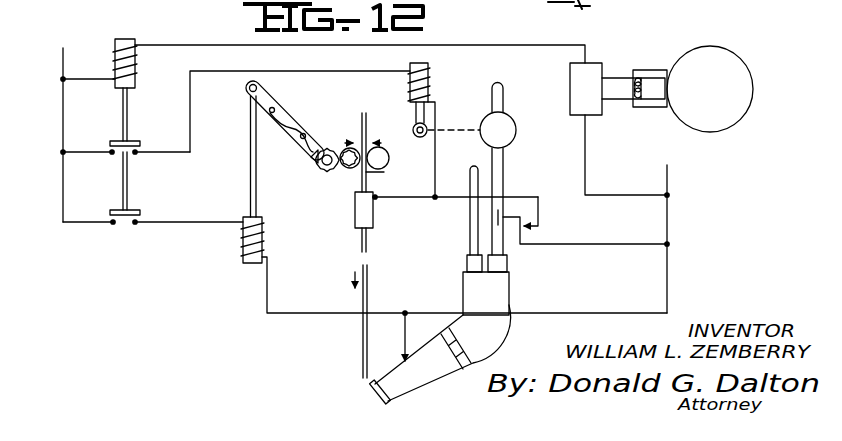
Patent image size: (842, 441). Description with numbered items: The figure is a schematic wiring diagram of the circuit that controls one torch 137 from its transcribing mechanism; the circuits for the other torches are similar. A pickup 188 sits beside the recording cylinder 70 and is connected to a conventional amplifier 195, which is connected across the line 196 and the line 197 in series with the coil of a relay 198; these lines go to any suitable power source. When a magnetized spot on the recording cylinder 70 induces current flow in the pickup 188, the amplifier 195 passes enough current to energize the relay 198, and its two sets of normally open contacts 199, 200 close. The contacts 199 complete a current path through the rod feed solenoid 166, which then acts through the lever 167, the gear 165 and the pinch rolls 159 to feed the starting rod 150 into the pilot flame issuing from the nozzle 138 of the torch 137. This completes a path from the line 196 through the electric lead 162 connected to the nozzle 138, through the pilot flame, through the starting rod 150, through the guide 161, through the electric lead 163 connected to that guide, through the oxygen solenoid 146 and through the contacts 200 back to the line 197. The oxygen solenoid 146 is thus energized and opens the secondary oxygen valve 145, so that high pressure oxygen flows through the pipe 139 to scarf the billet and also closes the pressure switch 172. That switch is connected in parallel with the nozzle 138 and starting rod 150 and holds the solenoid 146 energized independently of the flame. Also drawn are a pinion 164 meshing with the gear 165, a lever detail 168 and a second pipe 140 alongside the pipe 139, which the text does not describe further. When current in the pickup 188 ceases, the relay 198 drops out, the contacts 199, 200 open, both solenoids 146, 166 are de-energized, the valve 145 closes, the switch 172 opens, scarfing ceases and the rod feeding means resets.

The recording cylinder 70 is at (740, 102).
The torch 137 is at (500, 330).
The nozzle 138 is at (372, 393).
The pipe 139 is at (502, 177).
The second pipe 140 is at (471, 214).
The secondary oxygen valve 145 is at (511, 114).
The oxygen solenoid 146 is at (431, 78).
The starting rod 150 is at (362, 334).
The pinch rolls 159 is at (383, 168).
The guide 161 is at (354, 212).
The electric lead 162 is at (404, 336).
The electric lead 163 is at (402, 201).
The pinion gear 164 is at (348, 145).
The gear 165 is at (327, 173).
The rod feed solenoid 166 is at (243, 257).
The lever 167 is at (290, 111).
The ratchet gear 168 is at (313, 157).
The pressure switch 172 is at (543, 216).
The pickup 188 is at (653, 72).
The amplifier 195 is at (600, 106).
The line 196 is at (667, 180).
The line 197 is at (62, 59).
The relay 198 is at (129, 80).
The contacts 199 is at (124, 216).
The contacts 200 is at (136, 155).